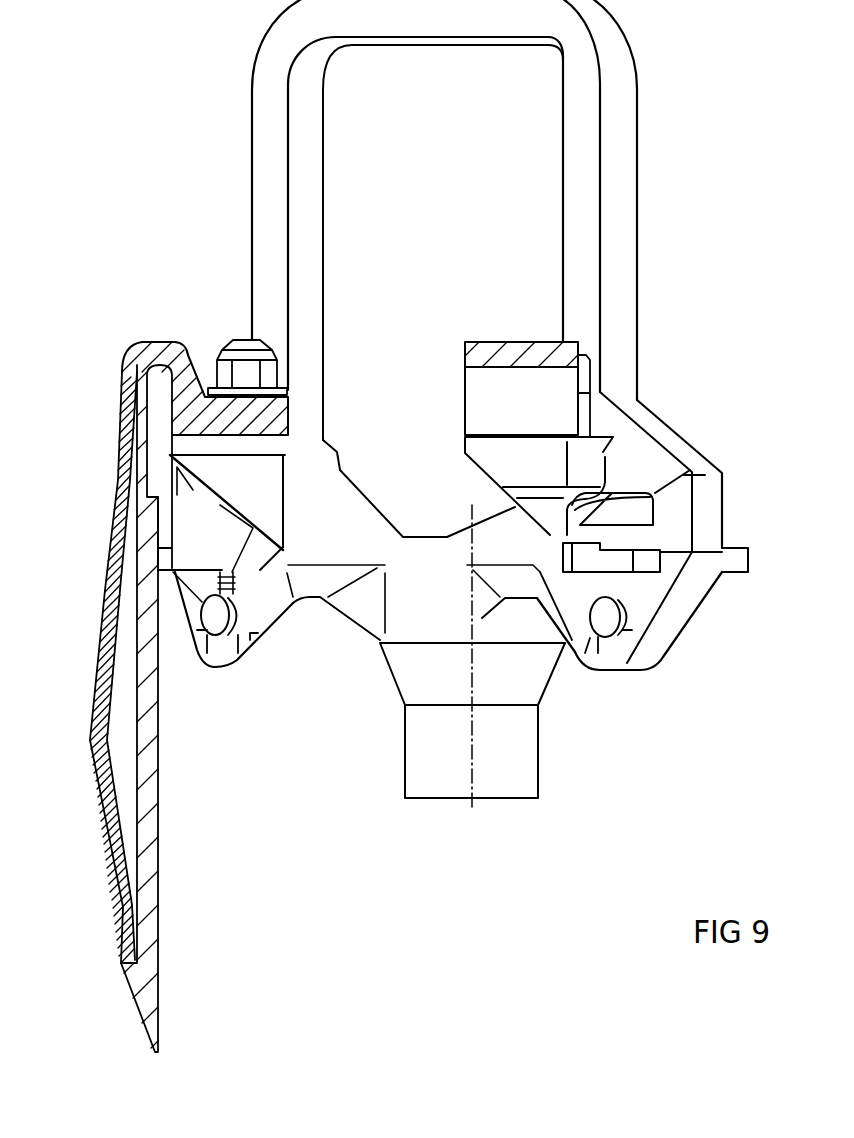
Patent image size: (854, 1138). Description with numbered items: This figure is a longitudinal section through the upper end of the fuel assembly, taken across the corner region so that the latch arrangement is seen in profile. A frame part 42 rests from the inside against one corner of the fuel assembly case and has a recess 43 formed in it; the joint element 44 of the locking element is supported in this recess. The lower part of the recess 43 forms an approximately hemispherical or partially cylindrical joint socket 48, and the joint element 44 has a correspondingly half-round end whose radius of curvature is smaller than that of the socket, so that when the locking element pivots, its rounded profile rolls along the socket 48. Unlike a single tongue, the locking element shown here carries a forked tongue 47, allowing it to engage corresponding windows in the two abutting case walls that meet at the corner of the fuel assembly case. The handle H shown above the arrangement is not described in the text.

The handle H is at (627, 191).
The frame part 42 is at (710, 503).
The recess 43 is at (652, 490).
The joint element 44 is at (612, 615).
The forked tongue 47 is at (733, 573).
The joint socket 48 is at (612, 657).